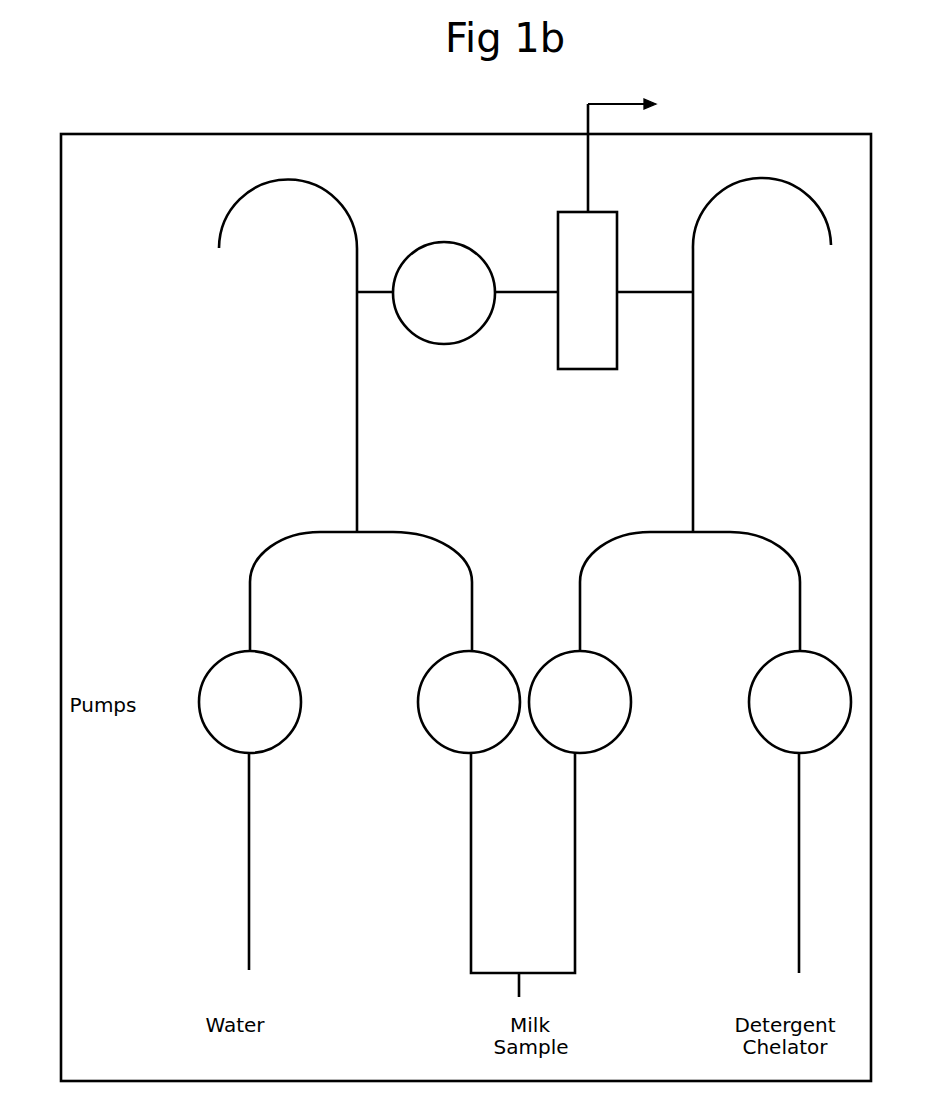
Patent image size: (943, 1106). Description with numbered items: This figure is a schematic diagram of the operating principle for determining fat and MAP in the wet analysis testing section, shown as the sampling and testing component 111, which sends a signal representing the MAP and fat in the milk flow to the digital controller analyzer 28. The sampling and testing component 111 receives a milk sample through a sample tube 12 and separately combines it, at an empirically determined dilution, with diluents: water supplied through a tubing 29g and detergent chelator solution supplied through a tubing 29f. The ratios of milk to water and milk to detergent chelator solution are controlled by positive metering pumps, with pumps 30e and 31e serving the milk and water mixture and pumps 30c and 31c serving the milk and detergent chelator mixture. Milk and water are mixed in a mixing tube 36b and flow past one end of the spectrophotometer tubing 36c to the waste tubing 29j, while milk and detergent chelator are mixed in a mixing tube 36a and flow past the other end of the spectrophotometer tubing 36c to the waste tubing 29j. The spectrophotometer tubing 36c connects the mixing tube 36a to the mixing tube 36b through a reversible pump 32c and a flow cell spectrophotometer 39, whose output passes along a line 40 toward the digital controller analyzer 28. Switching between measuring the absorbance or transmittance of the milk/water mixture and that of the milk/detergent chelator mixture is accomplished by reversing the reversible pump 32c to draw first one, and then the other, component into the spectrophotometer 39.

The sampling and testing component 111 is at (220, 134).
The digital controller analyzer 28 is at (669, 103).
The outlet line to analyzer 40 is at (588, 147).
The flow cell spectrophotometer 39 is at (582, 357).
The reversible pump 32c is at (475, 306).
The spectrophotometer tubing 36c is at (527, 293).
The mixing tube 36b is at (357, 406).
The mixing tube 36a is at (693, 420).
The waste tubing 29j is at (182, 291).
The positive metering pump 31e is at (217, 716).
The positive metering pump 30e is at (437, 716).
The positive metering pump 30c is at (552, 716).
The positive metering pump 31c is at (770, 716).
The tubing 29g is at (247, 833).
The sample tube 12 is at (470, 850).
The tubing 29f is at (798, 863).